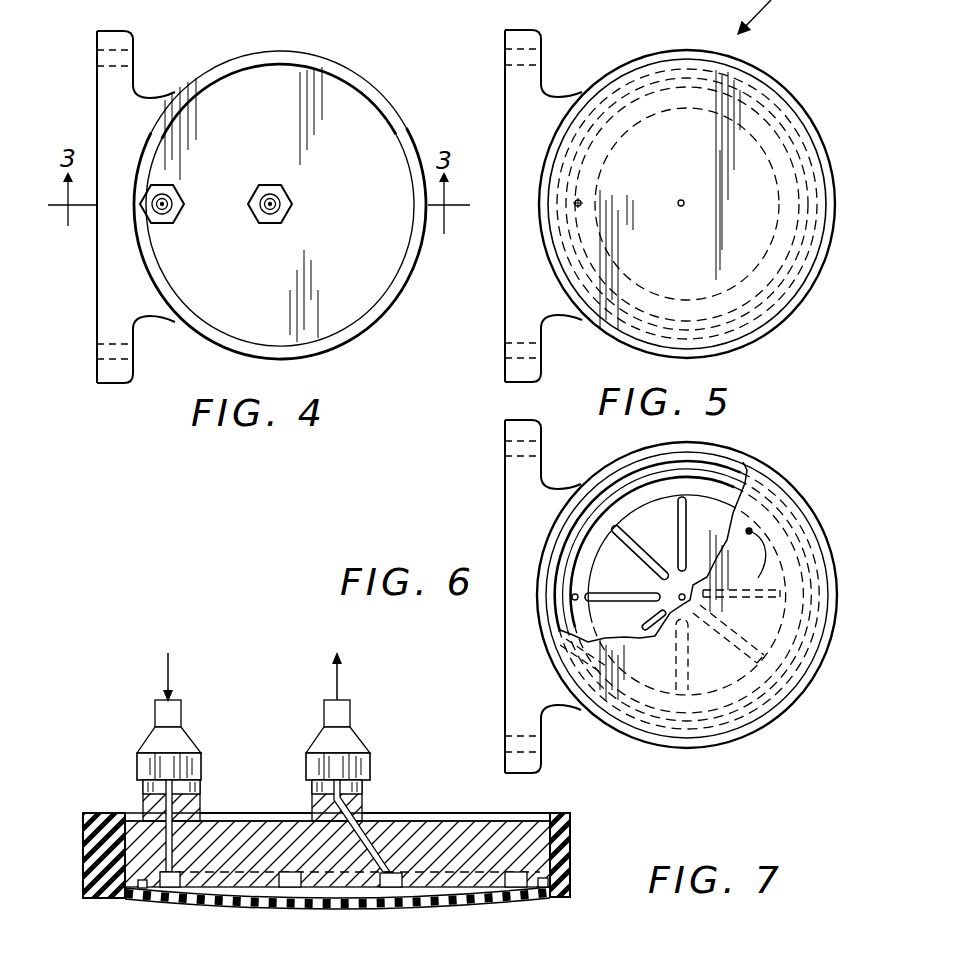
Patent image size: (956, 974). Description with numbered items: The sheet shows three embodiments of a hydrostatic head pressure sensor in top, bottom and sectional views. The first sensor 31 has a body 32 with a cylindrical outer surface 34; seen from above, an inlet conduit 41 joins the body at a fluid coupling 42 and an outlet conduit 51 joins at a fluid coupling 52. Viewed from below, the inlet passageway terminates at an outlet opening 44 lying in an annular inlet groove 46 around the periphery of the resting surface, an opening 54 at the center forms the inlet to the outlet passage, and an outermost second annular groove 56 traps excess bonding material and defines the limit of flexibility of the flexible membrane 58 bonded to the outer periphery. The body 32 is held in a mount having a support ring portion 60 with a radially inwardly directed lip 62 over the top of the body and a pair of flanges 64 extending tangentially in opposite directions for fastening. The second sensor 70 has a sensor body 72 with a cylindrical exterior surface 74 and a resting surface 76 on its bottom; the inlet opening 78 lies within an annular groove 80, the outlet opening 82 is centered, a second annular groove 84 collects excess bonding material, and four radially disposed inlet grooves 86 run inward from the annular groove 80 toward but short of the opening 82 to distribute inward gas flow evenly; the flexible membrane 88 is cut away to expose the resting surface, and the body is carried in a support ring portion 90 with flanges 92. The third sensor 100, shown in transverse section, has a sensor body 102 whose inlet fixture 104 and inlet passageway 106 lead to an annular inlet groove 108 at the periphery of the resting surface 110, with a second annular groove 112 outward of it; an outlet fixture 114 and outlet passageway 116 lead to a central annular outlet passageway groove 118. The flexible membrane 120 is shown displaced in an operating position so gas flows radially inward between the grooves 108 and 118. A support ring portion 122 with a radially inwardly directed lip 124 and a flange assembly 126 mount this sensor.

In FIG. 4, the pressure sensor 31 is at (146, 406).
In FIG. 4, the body 32 is at (362, 132).
In FIG. 4, the inlet conduit 41 is at (170, 220).
In FIG. 4, the fluid coupling 42 is at (180, 202).
In FIG. 4, the outlet conduit 51 is at (270, 221).
In FIG. 4, the fluid coupling 52 is at (268, 186).
In FIG. 4, the support ring portion 60 is at (330, 350).
In FIG. 5, the support ring portion 60 is at (646, 56).
In FIG. 4, the radially inwardly directed lip 62 is at (366, 287).
In FIG. 4, the flanges 64 is at (128, 44).
In FIG. 5, the flanges 64 is at (505, 40).
In FIG. 5, the cylindrical outer surface 34 is at (780, 95).
In FIG. 5, the outlet opening 44 is at (580, 200).
In FIG. 5, the annular inlet groove 46 is at (657, 70).
In FIG. 5, the opening 54 is at (681, 199).
In FIG. 5, the second annular groove 56 is at (697, 70).
In FIG. 5, the flexible membrane 58 is at (732, 262).
In FIG. 6, the pressure sensor 70 is at (791, 474).
In FIG. 6, the sensor body 72 is at (645, 525).
In FIG. 6, the cylindrical exterior surface 74 is at (712, 455).
In FIG. 6, the resting surface 76 is at (607, 547).
In FIG. 6, the opening 78 is at (598, 560).
In FIG. 6, the annular groove 80 is at (647, 488).
In FIG. 6, the opening 82 is at (545, 622).
In FIG. 6, the second annular groove 84 is at (570, 592).
In FIG. 6, the radially disposed inlet grooves 86 is at (641, 614).
In FIG. 6, the flexible membrane 88 is at (713, 655).
In FIG. 6, the support ring portion 90 is at (780, 722).
In FIG. 6, the flanges 92 is at (506, 438).
In FIG. 7, the pressure sensor 100 is at (128, 732).
In FIG. 7, the sensor body 102 is at (455, 835).
In FIG. 7, the inlet fixture 104 is at (200, 786).
In FIG. 7, the inlet passageway 106 is at (200, 818).
In FIG. 7, the annular inlet groove 108 is at (527, 895).
In FIG. 7, the resting surface 110 is at (341, 898).
In FIG. 7, the second annular groove 112 is at (545, 888).
In FIG. 7, the outlet fixture 114 is at (364, 792).
In FIG. 7, the outlet passageway 116 is at (365, 808).
In FIG. 7, the annular outlet passageway groove 118 is at (283, 897).
In FIG. 7, the flexible membrane 120 is at (453, 908).
In FIG. 7, the support ring portion 122 is at (572, 852).
In FIG. 7, the radially inwardly directed lip 124 is at (540, 818).
In FIG. 7, the flange assembly 126 is at (82, 830).